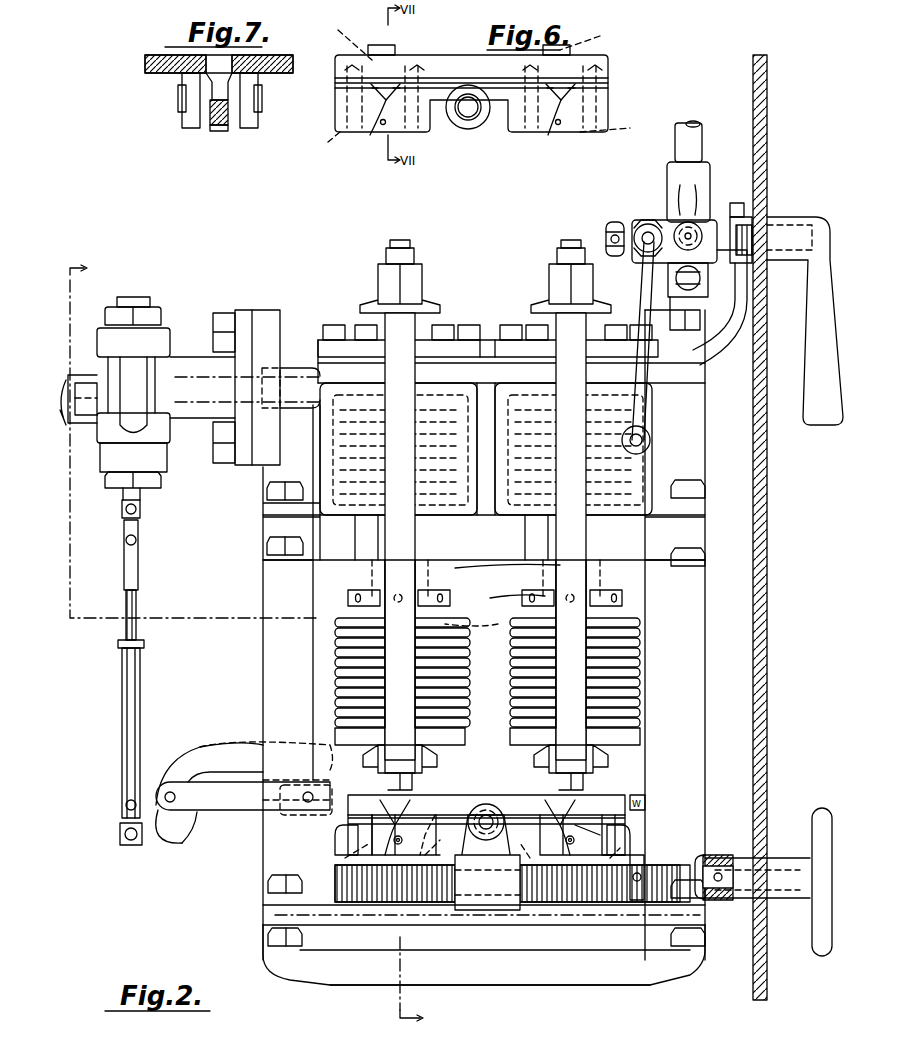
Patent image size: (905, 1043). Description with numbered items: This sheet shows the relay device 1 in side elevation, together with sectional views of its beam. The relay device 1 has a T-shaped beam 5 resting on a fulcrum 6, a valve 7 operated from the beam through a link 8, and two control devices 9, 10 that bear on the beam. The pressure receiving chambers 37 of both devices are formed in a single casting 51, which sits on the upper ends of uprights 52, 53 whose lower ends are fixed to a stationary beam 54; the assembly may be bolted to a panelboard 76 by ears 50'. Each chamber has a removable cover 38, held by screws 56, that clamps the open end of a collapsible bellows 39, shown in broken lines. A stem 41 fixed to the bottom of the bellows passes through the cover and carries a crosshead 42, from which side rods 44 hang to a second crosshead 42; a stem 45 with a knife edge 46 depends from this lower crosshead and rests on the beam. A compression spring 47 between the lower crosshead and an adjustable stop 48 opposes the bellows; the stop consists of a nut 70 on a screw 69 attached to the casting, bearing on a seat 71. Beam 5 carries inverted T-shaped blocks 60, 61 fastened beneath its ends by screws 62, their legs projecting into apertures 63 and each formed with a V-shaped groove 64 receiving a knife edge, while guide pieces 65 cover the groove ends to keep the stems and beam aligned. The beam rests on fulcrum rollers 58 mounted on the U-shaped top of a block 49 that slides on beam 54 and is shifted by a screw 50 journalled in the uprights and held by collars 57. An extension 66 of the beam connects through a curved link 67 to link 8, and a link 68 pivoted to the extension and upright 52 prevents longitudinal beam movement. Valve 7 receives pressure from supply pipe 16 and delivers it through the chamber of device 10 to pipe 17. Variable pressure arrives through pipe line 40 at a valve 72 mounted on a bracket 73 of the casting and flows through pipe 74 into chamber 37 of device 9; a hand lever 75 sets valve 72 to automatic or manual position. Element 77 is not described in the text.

In FIG. 2, the relay device 1 is at (204, 534).
In FIG. 6, the beam 5 is at (472, 60).
In FIG. 2, the beam 5 is at (470, 795).
In FIG. 6, the fulcrum 6 is at (474, 141).
In FIG. 2, the fulcrum 6 is at (490, 790).
In FIG. 2, the valve 7 is at (127, 294).
In FIG. 2, the link 8 is at (121, 656).
In FIG. 2, the control device 9 is at (562, 249).
In FIG. 2, the control device 10 is at (405, 239).
In FIG. 2, the supply pipe 16 is at (78, 430).
In FIG. 2, the pipe 17 is at (82, 375).
In FIG. 2, the pressure receiving chamber 37 is at (460, 500).
In FIG. 2, the removable cover 38 is at (352, 325).
In FIG. 2, the collapsible diaphragm or bellows 39 is at (336, 512).
In FIG. 2, the pipe line 40 is at (702, 142).
In FIG. 2, the stem or rod 41 is at (400, 252).
In FIG. 2, the crosshead 42 is at (440, 306).
In FIG. 2, the side rod 44 is at (385, 571).
In FIG. 6, the stem 45 is at (392, 46).
In FIG. 2, the stem 45 is at (420, 775).
In FIG. 6, the knife edge 46 is at (370, 137).
In FIG. 2, the knife edge 46 is at (625, 832).
In FIG. 2, the compression spring 47 is at (510, 656).
In FIG. 2, the adjustable stop 48 is at (338, 599).
In FIG. 2, the block 49 is at (500, 892).
In FIG. 2, the screw 50 is at (484, 954).
In FIG. 2, the ears 50' is at (763, 882).
In FIG. 2, the casting 51 is at (492, 515).
In FIG. 2, the upright 52 is at (263, 648).
In FIG. 2, the upright 53 is at (694, 672).
In FIG. 2, the stationary beam 54 is at (507, 972).
In FIG. 7, the screws 56 is at (145, 61).
In FIG. 2, the screws 56 is at (320, 325).
In FIG. 2, the collars 57 is at (715, 905).
In FIG. 7, the fulcrum rollers 58 is at (182, 86).
In FIG. 6, the fulcrum rollers 58 is at (490, 125).
In FIG. 2, the fulcrum rollers 58 is at (486, 849).
In FIG. 7, the block 60 is at (213, 118).
In FIG. 6, the block 60 is at (335, 112).
In FIG. 2, the block 60 is at (340, 840).
In FIG. 6, the block 61 is at (608, 110).
In FIG. 2, the block 61 is at (615, 840).
In FIG. 6, the screws 62 is at (535, 130).
In FIG. 2, the screws 62 is at (497, 851).
In FIG. 6, the apertures 63 is at (612, 50).
In FIG. 6, the V-shaped groove 64 is at (386, 100).
In FIG. 2, the V-shaped groove 64 is at (600, 810).
In FIG. 2, the guide pieces 65 is at (486, 839).
In FIG. 2, the extension 66 is at (195, 752).
In FIG. 2, the curved link 67 is at (165, 845).
In FIG. 2, the link 68 is at (223, 810).
In FIG. 2, the screw 69 is at (415, 568).
In FIG. 2, the adjustable nut 70 is at (450, 594).
In FIG. 2, the seat 71 is at (452, 614).
In FIG. 2, the valve 72 is at (632, 200).
In FIG. 2, the bracket 73 is at (705, 350).
In FIG. 2, the pipe 74 is at (643, 283).
In FIG. 2, the hand lever 75 is at (808, 320).
In FIG. 2, the panelboard 76 is at (767, 533).
In FIG. 2, the bolt 77 is at (724, 240).